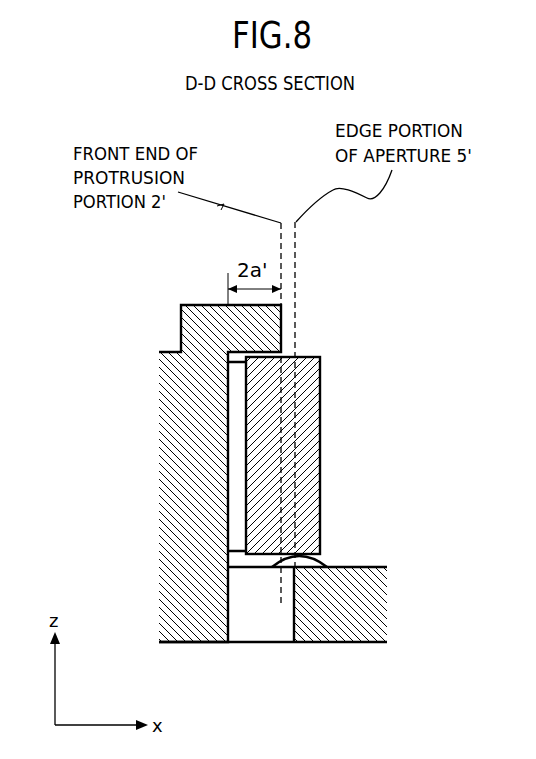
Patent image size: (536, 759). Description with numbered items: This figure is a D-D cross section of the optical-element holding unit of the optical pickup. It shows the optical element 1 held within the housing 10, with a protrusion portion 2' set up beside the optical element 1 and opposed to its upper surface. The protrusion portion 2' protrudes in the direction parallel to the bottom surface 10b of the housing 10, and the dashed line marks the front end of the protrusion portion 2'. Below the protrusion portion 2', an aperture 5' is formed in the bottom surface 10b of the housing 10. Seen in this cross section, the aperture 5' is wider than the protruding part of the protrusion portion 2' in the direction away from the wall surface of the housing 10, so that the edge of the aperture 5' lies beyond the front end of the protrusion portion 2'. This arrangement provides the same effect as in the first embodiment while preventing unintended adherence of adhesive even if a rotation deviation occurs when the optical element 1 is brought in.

The optical element 1 is at (320, 435).
The protrusion portion 2' is at (330, 413).
The aperture 5' is at (290, 470).
The housing 10 is at (187, 440).
The bottom surface 10b is at (367, 567).